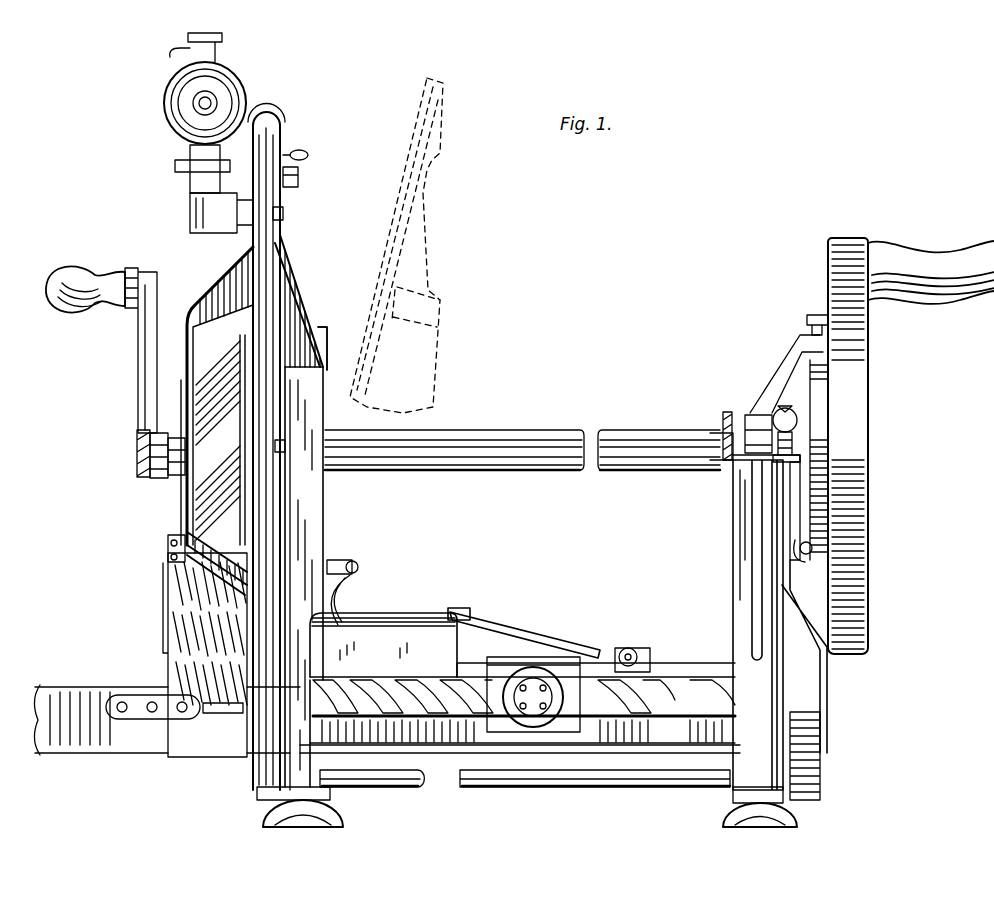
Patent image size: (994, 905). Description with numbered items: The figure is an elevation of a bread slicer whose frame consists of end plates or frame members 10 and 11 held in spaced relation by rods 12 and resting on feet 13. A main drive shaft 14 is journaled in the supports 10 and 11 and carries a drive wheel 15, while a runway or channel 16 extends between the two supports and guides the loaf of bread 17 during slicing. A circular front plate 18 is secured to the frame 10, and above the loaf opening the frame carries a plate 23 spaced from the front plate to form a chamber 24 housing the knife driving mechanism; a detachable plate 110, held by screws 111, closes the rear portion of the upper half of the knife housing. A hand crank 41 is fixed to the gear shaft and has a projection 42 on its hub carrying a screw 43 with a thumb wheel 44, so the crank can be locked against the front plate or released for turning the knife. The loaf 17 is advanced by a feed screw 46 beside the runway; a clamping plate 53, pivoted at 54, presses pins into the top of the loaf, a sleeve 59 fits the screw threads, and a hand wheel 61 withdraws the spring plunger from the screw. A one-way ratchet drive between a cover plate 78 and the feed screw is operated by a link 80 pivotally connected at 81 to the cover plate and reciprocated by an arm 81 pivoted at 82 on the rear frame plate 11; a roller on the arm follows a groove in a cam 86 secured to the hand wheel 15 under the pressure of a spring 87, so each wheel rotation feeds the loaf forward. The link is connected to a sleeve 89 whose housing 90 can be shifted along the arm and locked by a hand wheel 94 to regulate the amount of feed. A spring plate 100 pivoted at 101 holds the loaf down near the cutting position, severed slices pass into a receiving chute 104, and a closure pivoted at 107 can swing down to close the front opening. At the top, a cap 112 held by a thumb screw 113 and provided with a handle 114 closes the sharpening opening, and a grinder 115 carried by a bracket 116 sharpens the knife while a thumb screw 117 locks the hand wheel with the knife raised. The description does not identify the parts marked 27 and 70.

The end plate or frame member 10 is at (285, 650).
The end plate or frame member 11 is at (735, 604).
The rods 12 is at (545, 790).
The feet 13 is at (310, 818).
The main drive shaft 14 is at (592, 435).
The drive wheel 15 is at (857, 420).
The runway or channel 16 is at (455, 750).
The loaf of bread 17 is at (400, 625).
The circular front plate 18 is at (252, 415).
The plate 23 is at (315, 528).
The chamber 24 is at (290, 375).
The shaft 27 is at (478, 432).
The hand crank 41 is at (147, 365).
The projection 42 is at (165, 478).
The screw 43 is at (152, 476).
The thumb wheel 44 is at (138, 442).
The feed screw 46 is at (522, 734).
The clamping plate 53 is at (507, 628).
The pivot 54 is at (630, 650).
The sleeve 59 is at (562, 657).
The hand wheel 61 is at (540, 730).
The knurled wheel 70 is at (800, 720).
The cover plate 78 is at (820, 790).
The link 80 is at (828, 680).
The arm 81 is at (790, 418).
The pivot 82 is at (803, 475).
The cam 86 is at (815, 554).
The spring 87 is at (790, 550).
The sleeve 89 is at (805, 420).
The housing 90 is at (752, 413).
The hand wheel 94 is at (728, 420).
The spring plate 100 is at (352, 603).
The pivot 101 is at (357, 566).
The receiving chute 104 is at (100, 760).
The pivot 107 is at (172, 558).
The detachable plate 110 is at (420, 245).
The screws 111 is at (284, 220).
The cap 112 is at (283, 120).
The thumb screw 113 is at (300, 178).
The handle 114 is at (304, 151).
The grinder 115 is at (190, 148).
The bracket 116 is at (190, 214).
The thumb screw 117 is at (813, 318).